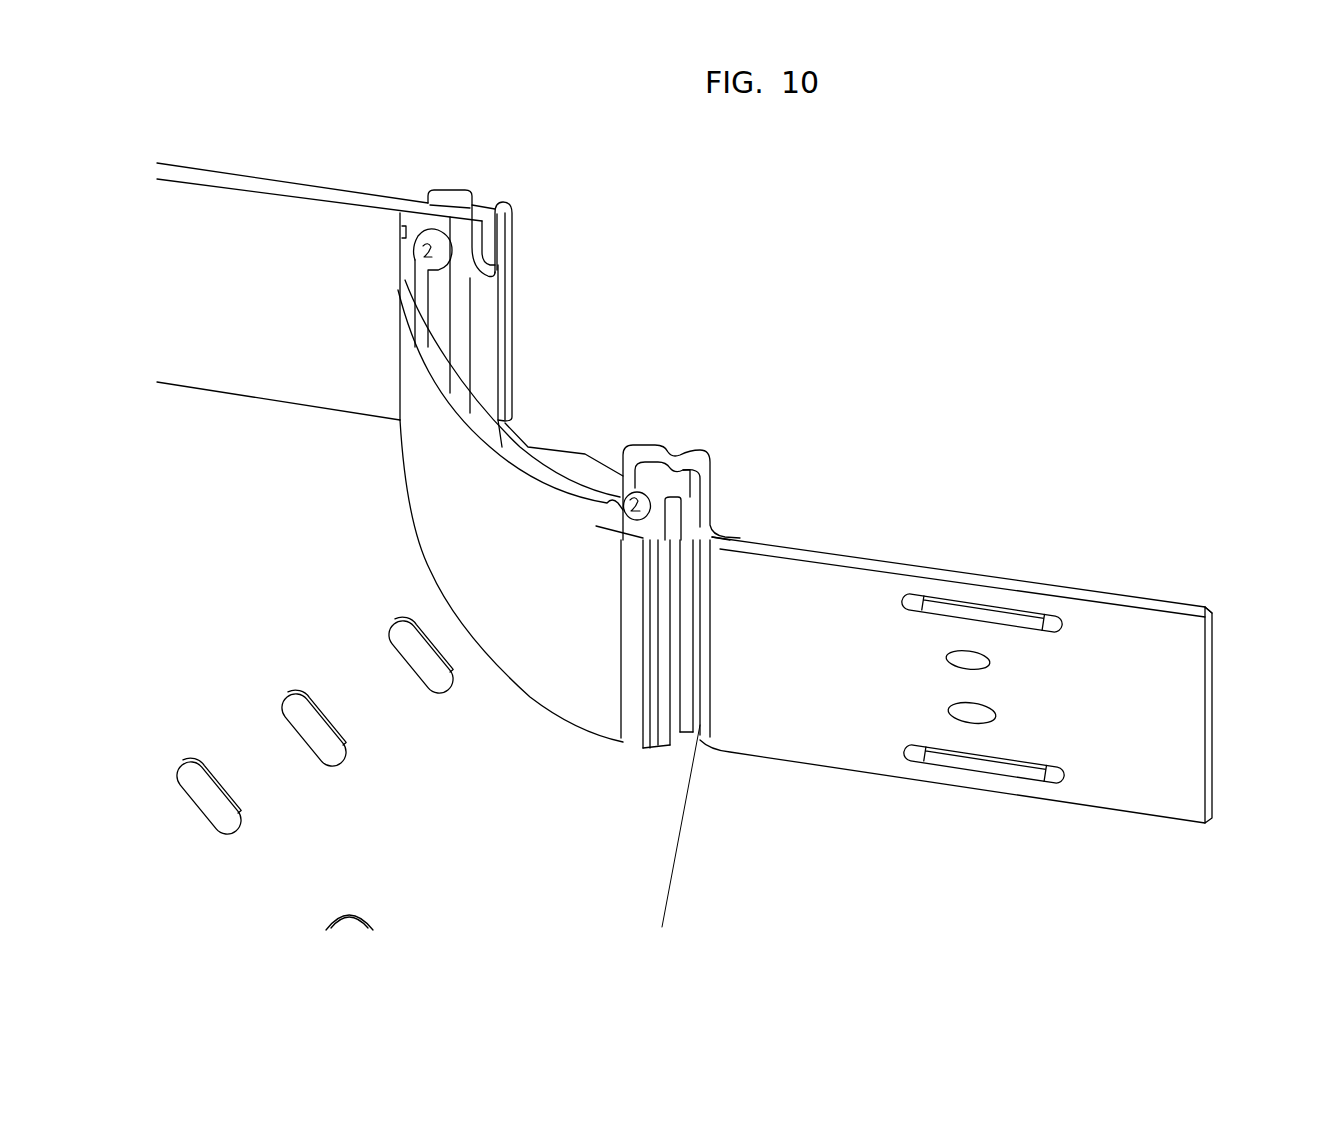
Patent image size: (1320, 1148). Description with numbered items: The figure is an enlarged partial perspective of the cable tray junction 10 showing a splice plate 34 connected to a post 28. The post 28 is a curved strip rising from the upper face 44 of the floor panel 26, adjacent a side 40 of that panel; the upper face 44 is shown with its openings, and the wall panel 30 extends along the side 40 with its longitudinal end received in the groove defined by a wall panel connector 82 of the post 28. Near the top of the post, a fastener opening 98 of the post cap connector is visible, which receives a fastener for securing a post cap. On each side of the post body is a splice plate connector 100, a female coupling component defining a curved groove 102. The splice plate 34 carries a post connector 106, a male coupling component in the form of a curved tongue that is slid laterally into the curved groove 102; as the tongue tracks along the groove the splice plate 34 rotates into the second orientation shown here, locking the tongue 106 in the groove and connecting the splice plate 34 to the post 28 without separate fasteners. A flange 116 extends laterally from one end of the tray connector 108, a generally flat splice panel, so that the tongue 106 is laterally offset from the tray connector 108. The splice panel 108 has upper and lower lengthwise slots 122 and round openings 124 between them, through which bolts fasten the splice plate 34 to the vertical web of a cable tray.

The cable tray junction 10 is at (850, 258).
The floor panel 26 is at (670, 897).
The post 28 is at (408, 518).
The wall panel 30 is at (172, 165).
The splice plate 34 is at (1005, 568).
The side 40 is at (678, 843).
The upper face 44 is at (513, 841).
The wall panel connector 82 is at (457, 195).
The fastener opening 98 is at (425, 252).
The splice plate connector 100 is at (513, 252).
The curved groove 102 is at (478, 197).
The post connector 106 is at (670, 477).
The tray connector 108 is at (1122, 632).
The flange 116 is at (710, 507).
The slot 122 is at (1060, 632).
The round opening 124 is at (990, 662).